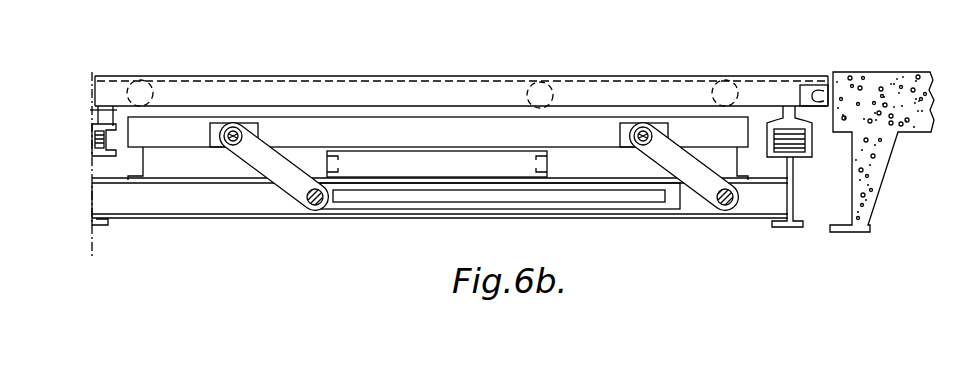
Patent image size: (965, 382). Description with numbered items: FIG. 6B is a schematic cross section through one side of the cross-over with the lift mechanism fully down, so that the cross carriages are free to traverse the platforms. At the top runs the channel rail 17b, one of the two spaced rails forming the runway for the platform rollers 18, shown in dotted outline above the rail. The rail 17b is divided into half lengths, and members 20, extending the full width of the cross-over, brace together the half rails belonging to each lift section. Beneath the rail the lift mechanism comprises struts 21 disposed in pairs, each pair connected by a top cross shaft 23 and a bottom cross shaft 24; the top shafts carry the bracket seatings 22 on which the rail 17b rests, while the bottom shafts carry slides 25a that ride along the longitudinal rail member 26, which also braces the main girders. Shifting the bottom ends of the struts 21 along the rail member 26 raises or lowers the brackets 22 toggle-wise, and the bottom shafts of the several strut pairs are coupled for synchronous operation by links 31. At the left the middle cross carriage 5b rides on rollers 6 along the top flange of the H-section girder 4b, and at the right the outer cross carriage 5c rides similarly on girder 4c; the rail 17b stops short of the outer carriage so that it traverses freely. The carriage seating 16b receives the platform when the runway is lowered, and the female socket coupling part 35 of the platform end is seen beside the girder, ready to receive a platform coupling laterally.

The seating 16b is at (96, 102).
The middle cross carriage 5b is at (109, 118).
The rollers 18 is at (147, 83).
The top cross shaft 23 is at (233, 130).
The bracket seating 22 is at (252, 128).
The channel rail 17b is at (407, 130).
The outer cross carriage 5c is at (787, 116).
The female socket coupling part 35 is at (812, 89).
The rollers 6 is at (98, 139).
The main cross girder 4c is at (796, 198).
The main cross girder 4b is at (98, 210).
The link 31 is at (175, 186).
The longitudinal rail member 26 is at (216, 200).
The strut 21 is at (291, 184).
The bottom cross shaft 24 is at (319, 205).
The slide 25a is at (366, 209).
The cross-member 20 is at (330, 160).